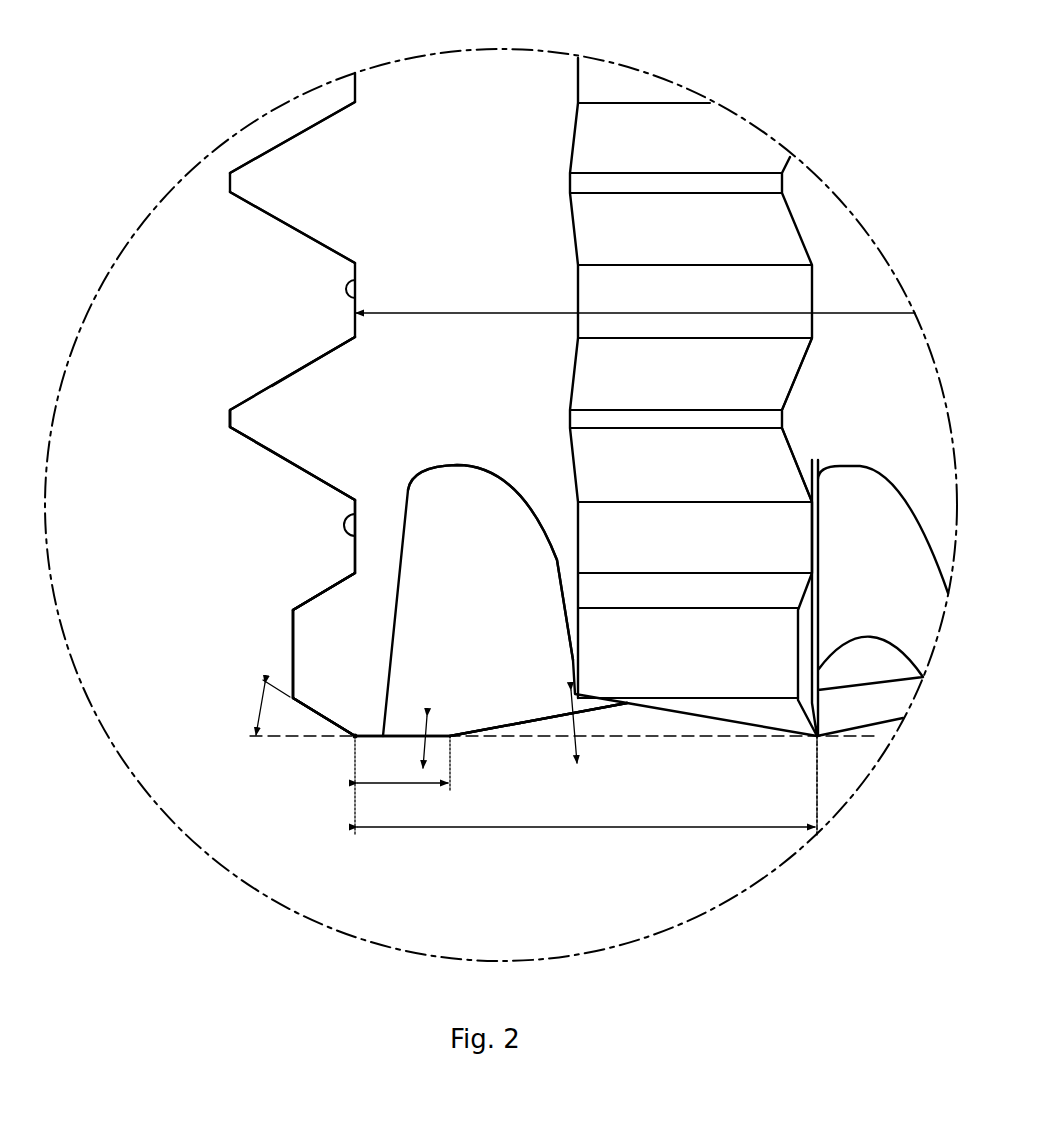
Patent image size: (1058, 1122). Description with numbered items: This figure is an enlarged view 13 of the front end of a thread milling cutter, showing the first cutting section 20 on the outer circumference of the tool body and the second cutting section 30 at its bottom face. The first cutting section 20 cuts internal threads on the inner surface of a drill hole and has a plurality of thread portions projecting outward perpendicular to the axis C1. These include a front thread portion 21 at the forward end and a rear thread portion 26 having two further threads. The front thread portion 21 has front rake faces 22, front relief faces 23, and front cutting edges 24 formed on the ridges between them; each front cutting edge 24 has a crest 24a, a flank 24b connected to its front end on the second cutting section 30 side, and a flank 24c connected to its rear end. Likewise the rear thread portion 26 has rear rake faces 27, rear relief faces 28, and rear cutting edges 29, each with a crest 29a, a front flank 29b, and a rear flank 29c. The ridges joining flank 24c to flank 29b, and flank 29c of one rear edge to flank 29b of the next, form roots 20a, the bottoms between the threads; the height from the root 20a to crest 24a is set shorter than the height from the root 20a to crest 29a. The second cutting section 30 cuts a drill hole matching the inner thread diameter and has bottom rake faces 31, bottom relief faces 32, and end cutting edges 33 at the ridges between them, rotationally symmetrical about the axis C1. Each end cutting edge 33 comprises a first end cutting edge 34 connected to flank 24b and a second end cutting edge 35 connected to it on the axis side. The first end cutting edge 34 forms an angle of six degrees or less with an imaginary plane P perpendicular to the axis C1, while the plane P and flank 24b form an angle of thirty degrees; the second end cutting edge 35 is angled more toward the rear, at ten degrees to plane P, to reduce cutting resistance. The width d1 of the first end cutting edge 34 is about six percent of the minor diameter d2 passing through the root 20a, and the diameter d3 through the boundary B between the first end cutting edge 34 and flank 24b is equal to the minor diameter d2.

The enlarged portion circle 13 is at (448, 80).
The first cutting section 20 is at (198, 688).
The root 20a is at (356, 288).
The front thread portion 21 is at (280, 578).
The front rake face 22 is at (332, 705).
The front relief face 23 is at (703, 698).
The front cutting edge 24 is at (212, 590).
The crest 24a is at (292, 652).
The flank 24b is at (310, 712).
The flank 24c is at (310, 590).
The rear thread portion 26 is at (232, 205).
The rear rake face 27 is at (297, 450).
The rear relief face 28 is at (592, 446).
The rear cutting edge 29 is at (160, 377).
The crest 29a is at (229, 419).
The flank 29b is at (262, 440).
The flank 29c is at (265, 380).
The second cutting section 30 is at (545, 860).
The bottom rake face 31 is at (445, 690).
The bottom relief face 32 is at (733, 738).
The end cutting edge 33 is at (560, 788).
The first end cutting edge 34 is at (440, 738).
The second end cutting edge 35 is at (557, 718).
The width of the first end cutting edge d1 is at (398, 784).
The minor diameter d2 is at (520, 313).
The diameter d3 is at (625, 832).
The boundary B is at (352, 745).
The imaginary plane P is at (652, 745).
The axis C1 is at (818, 788).